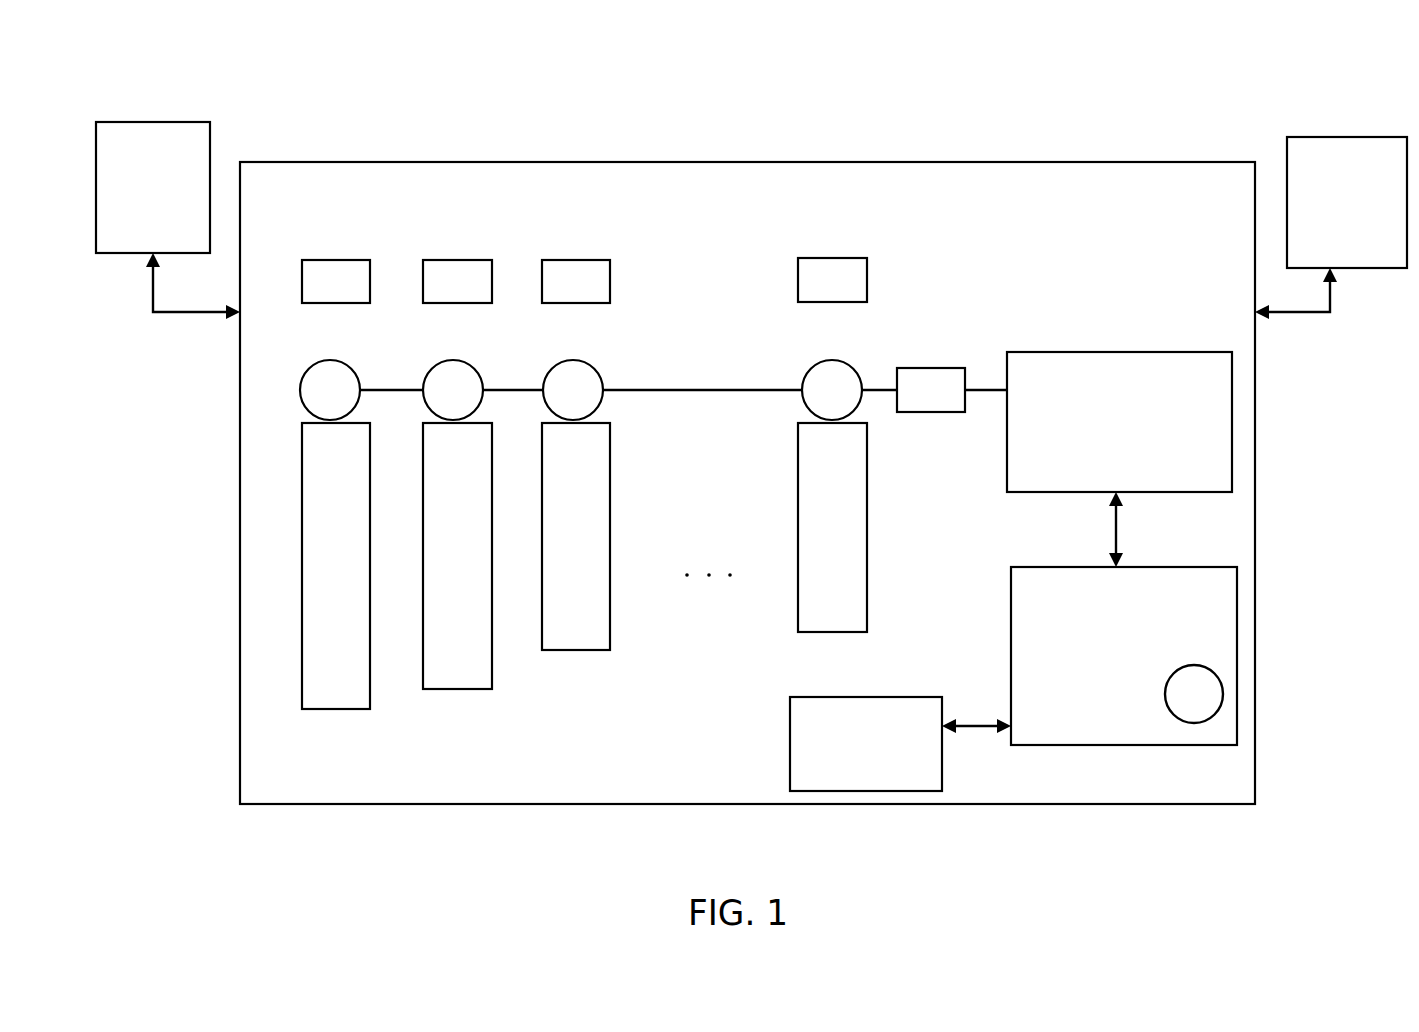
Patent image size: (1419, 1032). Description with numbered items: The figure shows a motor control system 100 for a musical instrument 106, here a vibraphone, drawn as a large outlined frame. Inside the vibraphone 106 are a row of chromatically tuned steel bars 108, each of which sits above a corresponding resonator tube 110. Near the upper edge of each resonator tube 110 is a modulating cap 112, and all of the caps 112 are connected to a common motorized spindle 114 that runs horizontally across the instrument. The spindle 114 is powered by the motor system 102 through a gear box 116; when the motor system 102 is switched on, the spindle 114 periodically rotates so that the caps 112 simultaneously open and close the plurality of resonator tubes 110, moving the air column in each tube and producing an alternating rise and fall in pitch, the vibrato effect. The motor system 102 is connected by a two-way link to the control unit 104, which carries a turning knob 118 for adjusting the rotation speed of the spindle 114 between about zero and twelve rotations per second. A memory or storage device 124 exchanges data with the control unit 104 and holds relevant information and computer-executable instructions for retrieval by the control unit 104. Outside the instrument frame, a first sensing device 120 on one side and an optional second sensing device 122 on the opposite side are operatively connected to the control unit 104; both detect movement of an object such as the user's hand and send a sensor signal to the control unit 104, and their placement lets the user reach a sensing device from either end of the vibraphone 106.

The motor control system 100 is at (528, 97).
The motor system 102 is at (1098, 450).
The control unit 104 is at (1103, 686).
The musical instrument 106 is at (727, 224).
The chromatically tuned steel bars 108 is at (575, 260).
The resonator tubes 110 is at (580, 650).
The modulating cap 112 is at (577, 360).
The motorized spindle 114 is at (665, 390).
The gear box 116 is at (932, 368).
The turning knob 118 is at (1194, 723).
The first sensing device 120 is at (1337, 137).
The optional second sensing device 122 is at (133, 122).
The memory or storage device 124 is at (845, 786).